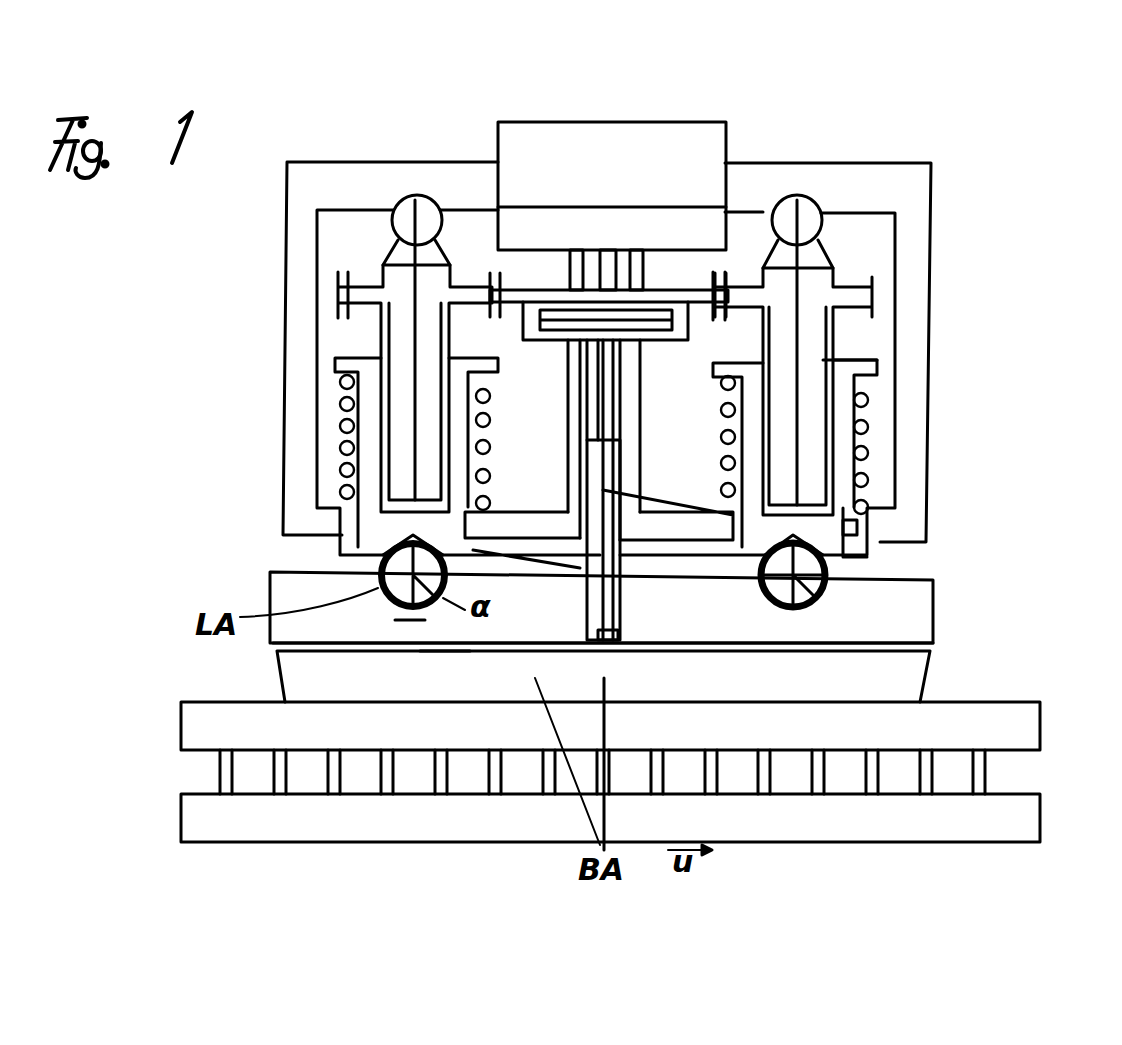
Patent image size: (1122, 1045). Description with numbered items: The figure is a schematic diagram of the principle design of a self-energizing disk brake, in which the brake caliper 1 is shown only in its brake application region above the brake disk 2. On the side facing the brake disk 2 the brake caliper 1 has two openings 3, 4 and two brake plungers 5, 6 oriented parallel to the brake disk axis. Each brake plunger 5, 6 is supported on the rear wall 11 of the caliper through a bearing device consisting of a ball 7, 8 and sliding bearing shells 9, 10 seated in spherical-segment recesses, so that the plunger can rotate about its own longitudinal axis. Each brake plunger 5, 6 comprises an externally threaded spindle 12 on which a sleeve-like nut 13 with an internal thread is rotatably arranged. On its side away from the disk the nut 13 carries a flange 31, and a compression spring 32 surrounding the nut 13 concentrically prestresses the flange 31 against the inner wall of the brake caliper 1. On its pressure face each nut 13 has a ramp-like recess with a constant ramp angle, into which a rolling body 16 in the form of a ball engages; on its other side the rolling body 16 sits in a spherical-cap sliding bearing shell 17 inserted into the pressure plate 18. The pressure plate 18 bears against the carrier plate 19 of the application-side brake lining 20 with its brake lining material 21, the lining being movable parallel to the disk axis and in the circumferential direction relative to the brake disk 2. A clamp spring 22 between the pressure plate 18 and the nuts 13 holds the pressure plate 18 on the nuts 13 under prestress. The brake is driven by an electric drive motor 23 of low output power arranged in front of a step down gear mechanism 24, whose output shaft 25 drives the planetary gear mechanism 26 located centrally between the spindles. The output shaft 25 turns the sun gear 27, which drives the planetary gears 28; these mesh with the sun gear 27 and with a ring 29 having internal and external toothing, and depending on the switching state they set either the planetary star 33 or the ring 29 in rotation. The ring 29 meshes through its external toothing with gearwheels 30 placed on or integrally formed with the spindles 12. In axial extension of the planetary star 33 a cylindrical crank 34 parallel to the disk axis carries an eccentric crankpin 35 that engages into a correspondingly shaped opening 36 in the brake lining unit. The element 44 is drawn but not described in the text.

The brake caliper 1 is at (318, 185).
The brake disk 2 is at (300, 815).
The opening 3 is at (340, 524).
The opening 4 is at (868, 532).
The brake plunger 5 is at (332, 355).
The brake plunger 6 is at (885, 355).
The ball 7 is at (407, 200).
The ball 8 is at (810, 213).
The sliding bearing shell 9 is at (432, 205).
The sliding bearing shell 10 is at (855, 190).
The rear wall 11 is at (822, 268).
The spindle 12 is at (398, 322).
The nut 13 is at (333, 433).
The rolling body 16 is at (360, 560).
The sliding bearing shell 17 is at (409, 616).
The pressure plate 18 is at (515, 612).
The carrier plate 19 is at (442, 655).
The application-side brake lining 20 is at (935, 640).
The brake lining material 21 is at (605, 820).
The clamp spring 22 is at (688, 655).
The electric drive motor 23 is at (650, 150).
The step down gear mechanism 24 is at (665, 233).
The output shaft 25 is at (606, 290).
The planetary gear mechanism 26 is at (688, 279).
The sun gear 27 is at (601, 293).
The planetary gear 28 is at (545, 338).
The ring 29 is at (517, 290).
The gearwheel 30 is at (360, 290).
The flange 31 is at (855, 357).
The compression spring 32 is at (868, 420).
The planetary star 33 is at (630, 352).
The crank 34 is at (855, 522).
The crankpin 35 is at (620, 637).
The opening 36 is at (628, 597).
The stop element 44 is at (867, 523).